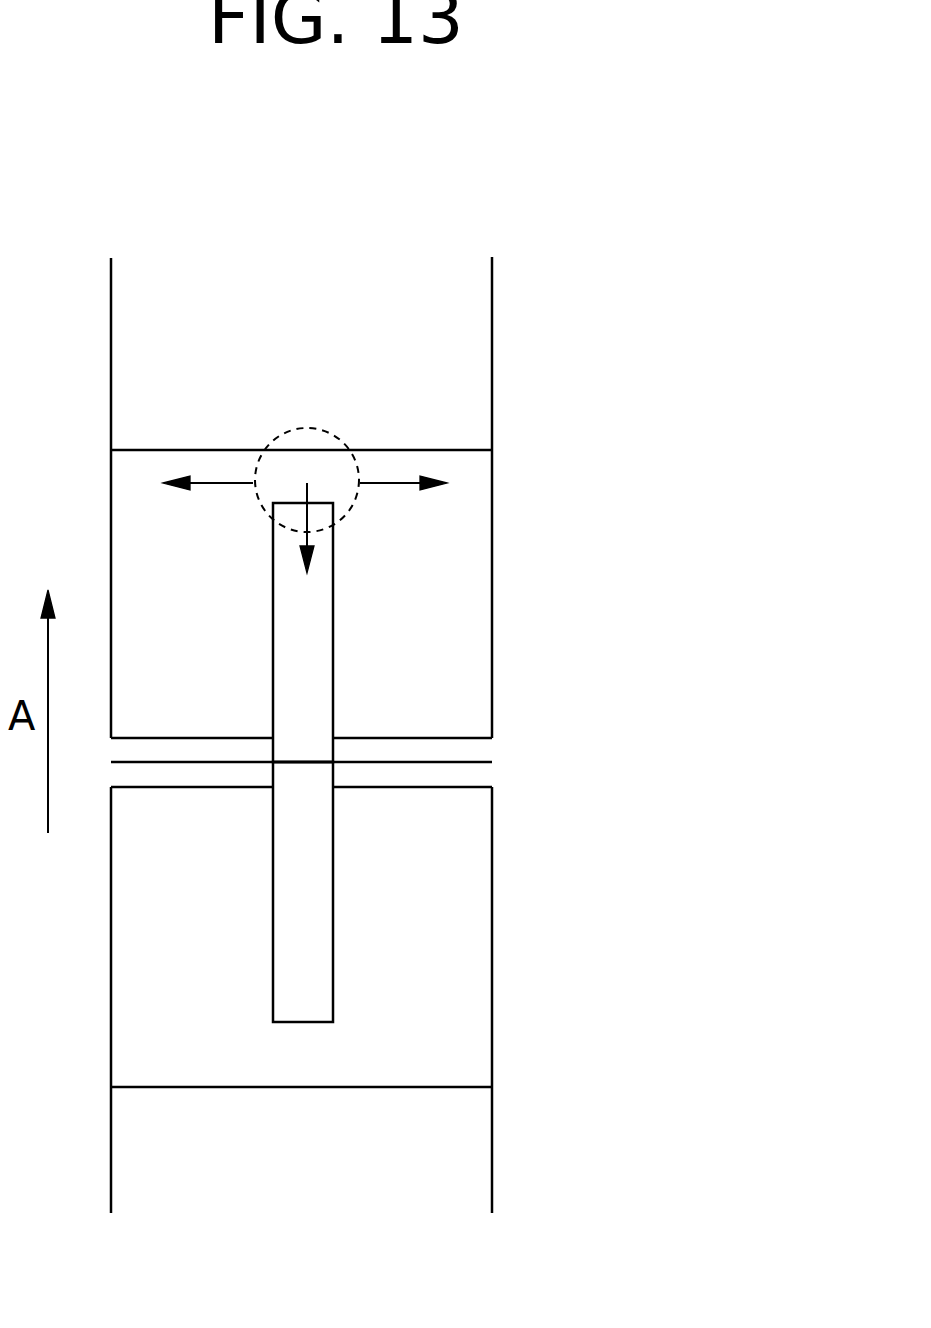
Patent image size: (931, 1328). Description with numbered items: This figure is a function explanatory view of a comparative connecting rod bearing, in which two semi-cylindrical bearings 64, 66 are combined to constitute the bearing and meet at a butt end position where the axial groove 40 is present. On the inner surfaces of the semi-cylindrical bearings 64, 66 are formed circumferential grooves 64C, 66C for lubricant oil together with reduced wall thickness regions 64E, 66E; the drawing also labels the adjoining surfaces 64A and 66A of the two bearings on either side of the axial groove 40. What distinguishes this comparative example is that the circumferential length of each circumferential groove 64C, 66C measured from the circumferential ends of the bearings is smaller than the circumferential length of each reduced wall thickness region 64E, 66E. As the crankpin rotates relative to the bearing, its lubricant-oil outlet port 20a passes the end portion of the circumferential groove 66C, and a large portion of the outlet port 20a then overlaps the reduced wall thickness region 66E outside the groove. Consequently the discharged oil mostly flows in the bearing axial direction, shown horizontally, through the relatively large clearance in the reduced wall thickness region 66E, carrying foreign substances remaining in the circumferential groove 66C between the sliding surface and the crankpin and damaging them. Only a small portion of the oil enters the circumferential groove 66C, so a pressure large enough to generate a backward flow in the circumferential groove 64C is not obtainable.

The lubricant-oil outlet port 20a is at (326, 428).
The axial groove 40 is at (520, 759).
The semi-cylindrical bearing 64 is at (460, 1157).
The upper surface of lower plate 64A is at (176, 738).
The circumferential groove 64C is at (293, 966).
The reduced wall thickness region 64E is at (465, 1009).
The semi-cylindrical bearing 66 is at (463, 390).
The lower surface of upper plate 66A is at (407, 790).
The circumferential groove 66C is at (310, 685).
The reduced wall thickness region 66E is at (453, 625).